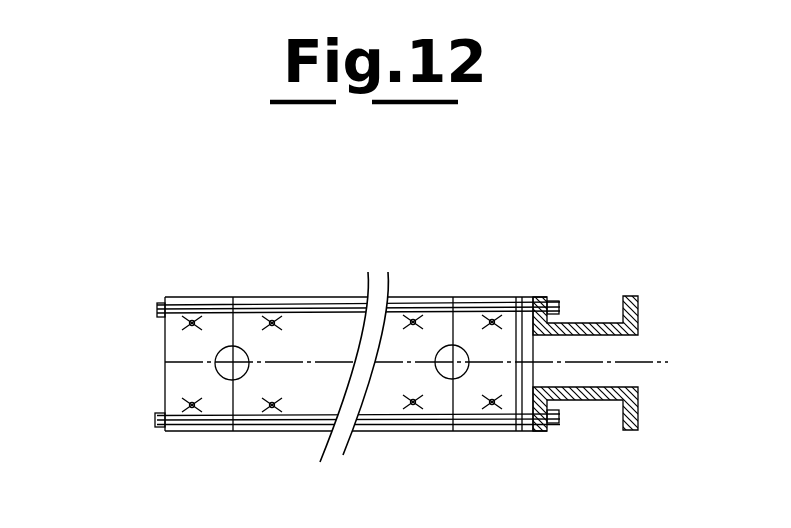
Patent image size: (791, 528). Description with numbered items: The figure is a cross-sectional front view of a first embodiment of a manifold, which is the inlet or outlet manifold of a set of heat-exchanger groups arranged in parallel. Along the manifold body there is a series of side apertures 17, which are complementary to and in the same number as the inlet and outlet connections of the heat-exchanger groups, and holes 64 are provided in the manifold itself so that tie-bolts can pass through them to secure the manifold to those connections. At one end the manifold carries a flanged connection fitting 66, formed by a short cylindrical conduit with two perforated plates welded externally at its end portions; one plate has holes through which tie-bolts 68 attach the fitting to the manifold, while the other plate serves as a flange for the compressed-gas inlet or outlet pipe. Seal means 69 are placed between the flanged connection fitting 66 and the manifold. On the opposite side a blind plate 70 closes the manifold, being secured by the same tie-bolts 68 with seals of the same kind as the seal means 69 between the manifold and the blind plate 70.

The side apertures 17 is at (228, 379).
The holes 64 is at (274, 398).
The flanged connection fitting 66 is at (587, 347).
The tie-bolts 68 is at (255, 297).
The seal means 69 is at (523, 295).
The blind plate 70 is at (157, 318).